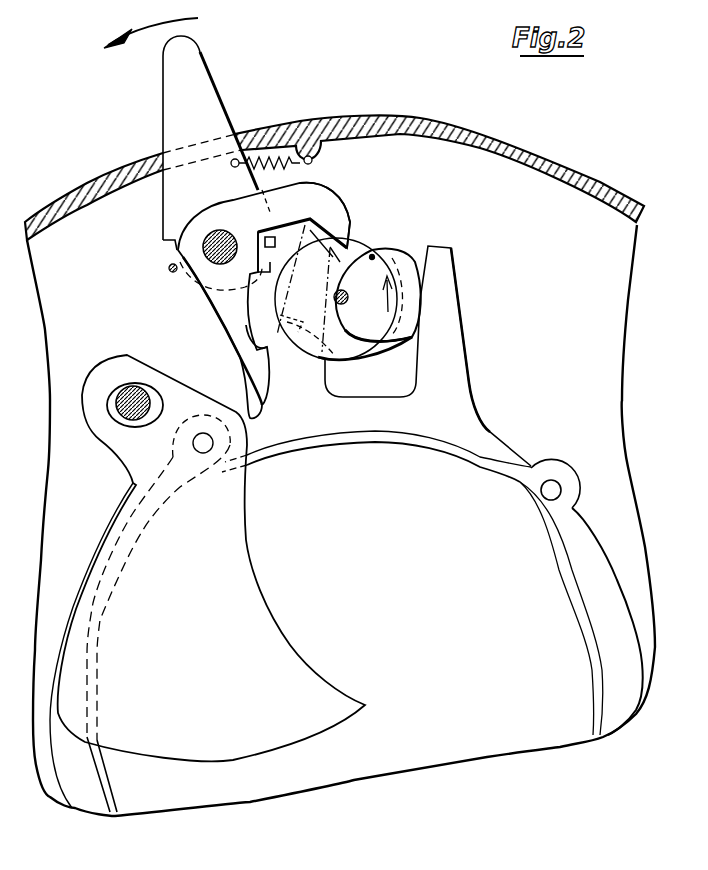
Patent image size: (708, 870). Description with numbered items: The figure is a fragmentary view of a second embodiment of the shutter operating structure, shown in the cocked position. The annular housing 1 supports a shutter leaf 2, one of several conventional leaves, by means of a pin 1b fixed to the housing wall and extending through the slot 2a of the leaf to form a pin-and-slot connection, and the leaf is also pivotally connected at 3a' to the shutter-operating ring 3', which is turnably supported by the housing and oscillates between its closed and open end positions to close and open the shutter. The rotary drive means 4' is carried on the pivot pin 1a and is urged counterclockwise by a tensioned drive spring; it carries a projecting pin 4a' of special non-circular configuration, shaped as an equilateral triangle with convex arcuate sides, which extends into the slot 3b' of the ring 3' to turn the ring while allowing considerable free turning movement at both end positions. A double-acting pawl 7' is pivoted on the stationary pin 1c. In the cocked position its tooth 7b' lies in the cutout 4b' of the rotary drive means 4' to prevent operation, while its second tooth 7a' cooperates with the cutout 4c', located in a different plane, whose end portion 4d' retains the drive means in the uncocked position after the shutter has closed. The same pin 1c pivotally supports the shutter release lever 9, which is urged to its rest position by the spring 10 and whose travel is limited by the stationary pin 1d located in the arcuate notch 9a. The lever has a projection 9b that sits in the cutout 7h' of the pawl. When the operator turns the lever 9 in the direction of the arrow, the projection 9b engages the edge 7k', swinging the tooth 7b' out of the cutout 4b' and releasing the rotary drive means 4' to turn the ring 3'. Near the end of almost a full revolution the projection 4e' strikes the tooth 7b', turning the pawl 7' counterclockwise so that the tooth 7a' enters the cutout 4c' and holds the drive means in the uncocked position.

The housing 1 is at (457, 453).
The pivot pin 1a is at (349, 297).
The pin 1b is at (130, 420).
The stationary pivot pin 1c is at (216, 233).
The stationary pin 1d is at (171, 273).
The shutter leaf 2 is at (266, 604).
The slot 2a is at (163, 410).
The shutter-operating ring 3' is at (475, 356).
The pivotal connection 3a' is at (158, 613).
The slot 3b' is at (390, 358).
The rotary drive means 4' is at (343, 307).
The projecting pin 4a' is at (378, 278).
The cutout 4b' is at (308, 288).
The cutout 4c' is at (310, 361).
The end portion of cutout 4d' is at (278, 326).
The projection 4e' is at (302, 222).
The double-acting pawl 7' is at (262, 301).
The second tooth 7a' is at (233, 352).
The tooth 7b' is at (348, 213).
The cutout 7h' is at (221, 278).
The edge 7k' is at (281, 203).
The shutter release lever 9 is at (197, 78).
The arcuate notch 9a is at (172, 246).
The projection 9b is at (273, 253).
The spring 10 is at (284, 150).